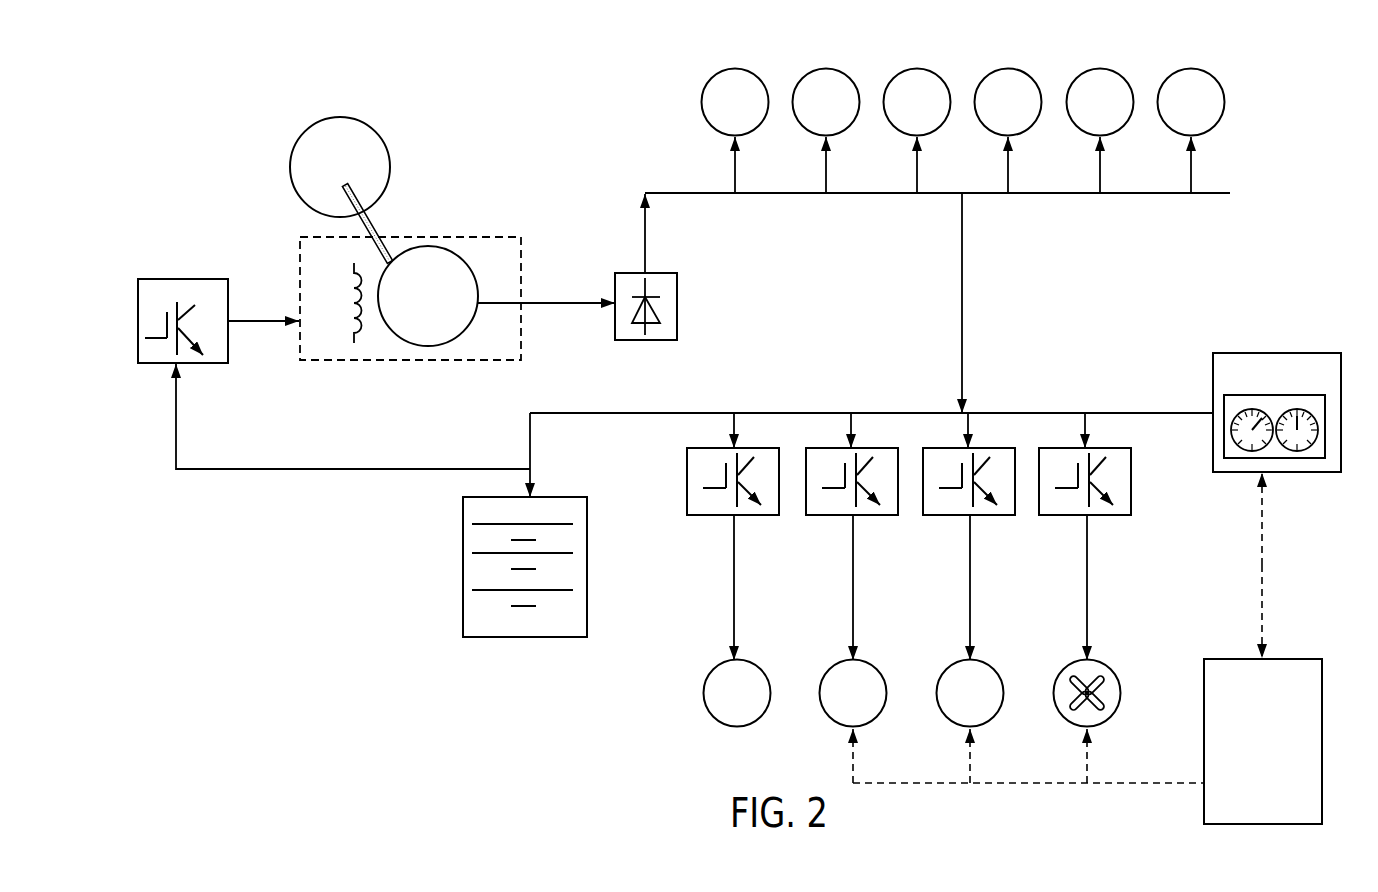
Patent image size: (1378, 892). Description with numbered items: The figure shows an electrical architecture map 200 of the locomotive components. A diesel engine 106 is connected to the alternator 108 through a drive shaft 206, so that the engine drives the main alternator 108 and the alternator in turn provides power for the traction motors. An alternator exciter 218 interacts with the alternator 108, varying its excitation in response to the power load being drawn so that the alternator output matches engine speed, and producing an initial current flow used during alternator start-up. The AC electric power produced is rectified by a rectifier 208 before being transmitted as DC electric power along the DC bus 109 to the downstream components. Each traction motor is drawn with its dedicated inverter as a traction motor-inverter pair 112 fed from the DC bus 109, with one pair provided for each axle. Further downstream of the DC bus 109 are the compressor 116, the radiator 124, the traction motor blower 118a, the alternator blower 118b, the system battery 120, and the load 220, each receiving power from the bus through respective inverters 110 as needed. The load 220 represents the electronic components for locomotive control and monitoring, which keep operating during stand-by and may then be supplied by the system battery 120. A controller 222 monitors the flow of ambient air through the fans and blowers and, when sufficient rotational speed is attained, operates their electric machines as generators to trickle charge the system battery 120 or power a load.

The electrical architecture map 200 is at (232, 104).
The diesel engine 106 is at (360, 118).
The drive shaft 206 is at (377, 225).
The alternator 108 is at (492, 237).
The alternator exciter 218 is at (180, 279).
The rectifier 208 is at (677, 302).
The traction motor-inverter pair 112 is at (753, 73).
The DC bus 109 is at (1225, 191).
The inverters 110 is at (752, 447).
The load 220 is at (1260, 352).
The system battery 120 is at (525, 637).
The compressor 116 is at (758, 665).
The alternator blower 118b is at (877, 663).
The traction motor blower 118a is at (993, 663).
The radiator 124 is at (1110, 662).
The controller 222 is at (1285, 659).